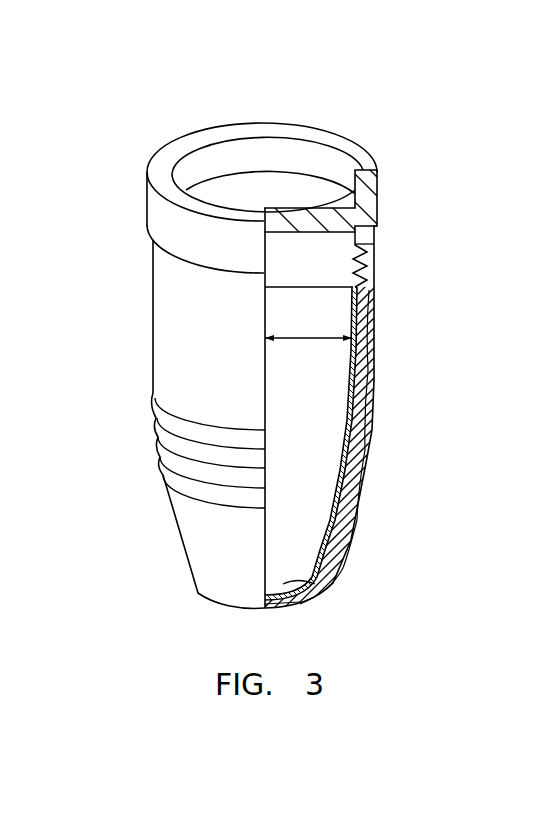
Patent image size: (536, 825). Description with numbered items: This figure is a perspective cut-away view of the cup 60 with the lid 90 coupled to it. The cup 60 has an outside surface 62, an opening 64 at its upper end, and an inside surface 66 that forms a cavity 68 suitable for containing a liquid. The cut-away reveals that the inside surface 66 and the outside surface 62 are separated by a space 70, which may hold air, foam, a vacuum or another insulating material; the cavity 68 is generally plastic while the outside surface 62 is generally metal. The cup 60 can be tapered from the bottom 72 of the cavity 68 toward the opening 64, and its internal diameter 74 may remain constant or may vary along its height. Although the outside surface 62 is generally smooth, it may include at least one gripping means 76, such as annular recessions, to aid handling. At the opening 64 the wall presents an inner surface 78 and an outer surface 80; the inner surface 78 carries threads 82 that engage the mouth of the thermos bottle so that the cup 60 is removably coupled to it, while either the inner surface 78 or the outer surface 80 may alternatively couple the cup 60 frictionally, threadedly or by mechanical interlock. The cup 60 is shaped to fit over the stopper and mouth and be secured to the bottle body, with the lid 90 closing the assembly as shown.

The lid 90 is at (192, 96).
The cup 60 is at (141, 424).
The outside surface 62 is at (268, 445).
The opening 64 is at (312, 297).
The inside surface 66 is at (356, 430).
The cavity 68 is at (311, 452).
The space 70 is at (340, 510).
The bottom 72 is at (315, 593).
The internal diameter 74 is at (308, 329).
The gripping means 76 is at (160, 456).
The inner surface 78 is at (374, 233).
The outer surface 80 is at (363, 277).
The threads 82 is at (375, 267).